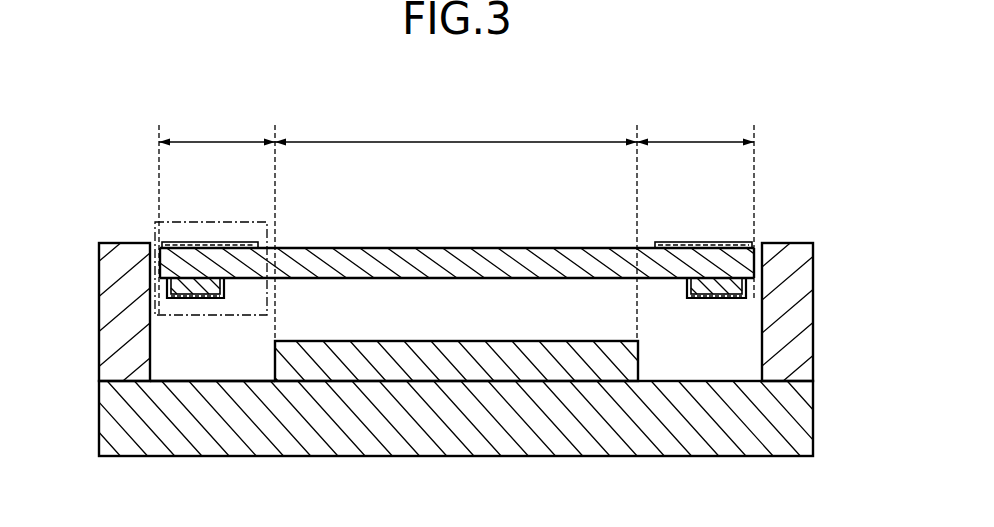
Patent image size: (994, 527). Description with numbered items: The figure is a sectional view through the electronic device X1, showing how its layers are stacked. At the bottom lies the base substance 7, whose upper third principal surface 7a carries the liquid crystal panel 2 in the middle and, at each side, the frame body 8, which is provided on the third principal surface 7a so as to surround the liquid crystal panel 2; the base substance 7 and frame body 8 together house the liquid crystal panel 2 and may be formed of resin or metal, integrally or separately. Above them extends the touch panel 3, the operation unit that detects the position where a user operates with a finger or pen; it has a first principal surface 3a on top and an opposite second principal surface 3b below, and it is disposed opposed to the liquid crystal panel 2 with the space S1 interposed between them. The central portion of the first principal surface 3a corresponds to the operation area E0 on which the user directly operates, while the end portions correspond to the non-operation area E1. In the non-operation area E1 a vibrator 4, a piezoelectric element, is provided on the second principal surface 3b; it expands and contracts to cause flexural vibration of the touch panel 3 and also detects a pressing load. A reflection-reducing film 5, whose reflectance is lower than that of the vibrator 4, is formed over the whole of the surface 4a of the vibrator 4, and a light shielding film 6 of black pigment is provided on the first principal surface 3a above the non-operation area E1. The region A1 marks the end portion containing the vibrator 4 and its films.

The liquid crystal panel 2 is at (507, 368).
The touch panel 3 is at (320, 255).
The first principal surface 3a is at (365, 247).
The second principal surface 3b is at (384, 278).
The vibrator 4 is at (202, 283).
The surface of the vibrator 4a is at (185, 300).
The reflection-reducing film 5 is at (167, 287).
The light shielding film 6 is at (183, 245).
The base substance 7 is at (447, 445).
The third principal surface 7a is at (212, 376).
The frame body 8 is at (107, 312).
The enlarged region A1 is at (167, 221).
The space S1 is at (546, 310).
The electronic device X1 is at (794, 124).
The operation area E0 is at (456, 229).
The non-operation area E1 is at (456, 215).